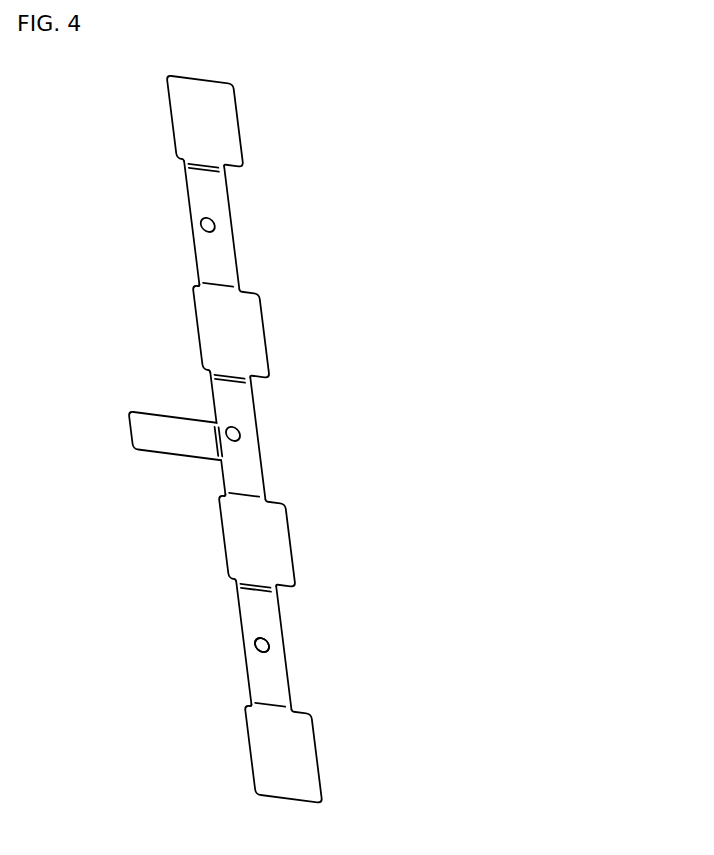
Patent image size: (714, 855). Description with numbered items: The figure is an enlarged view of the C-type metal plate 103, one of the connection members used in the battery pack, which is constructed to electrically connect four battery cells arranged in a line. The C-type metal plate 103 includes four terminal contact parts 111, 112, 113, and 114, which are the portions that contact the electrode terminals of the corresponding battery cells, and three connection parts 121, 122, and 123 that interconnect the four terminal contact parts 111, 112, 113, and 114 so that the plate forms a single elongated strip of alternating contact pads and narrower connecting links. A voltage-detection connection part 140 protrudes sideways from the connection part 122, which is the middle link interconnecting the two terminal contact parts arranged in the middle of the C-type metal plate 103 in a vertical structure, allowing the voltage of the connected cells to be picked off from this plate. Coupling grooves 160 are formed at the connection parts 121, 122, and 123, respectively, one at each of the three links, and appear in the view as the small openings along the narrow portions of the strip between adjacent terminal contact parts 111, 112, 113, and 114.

The C-type metal plate 103 is at (287, 213).
The terminal contact part 111 is at (173, 143).
The terminal contact part 112 is at (199, 337).
The terminal contact part 113 is at (225, 553).
The terminal contact part 114 is at (251, 747).
The connection part 121 is at (190, 227).
The connection part 122 is at (257, 432).
The connection part 123 is at (243, 648).
The voltage-detection connection part 140 is at (157, 412).
The coupling groove 160 is at (270, 645).